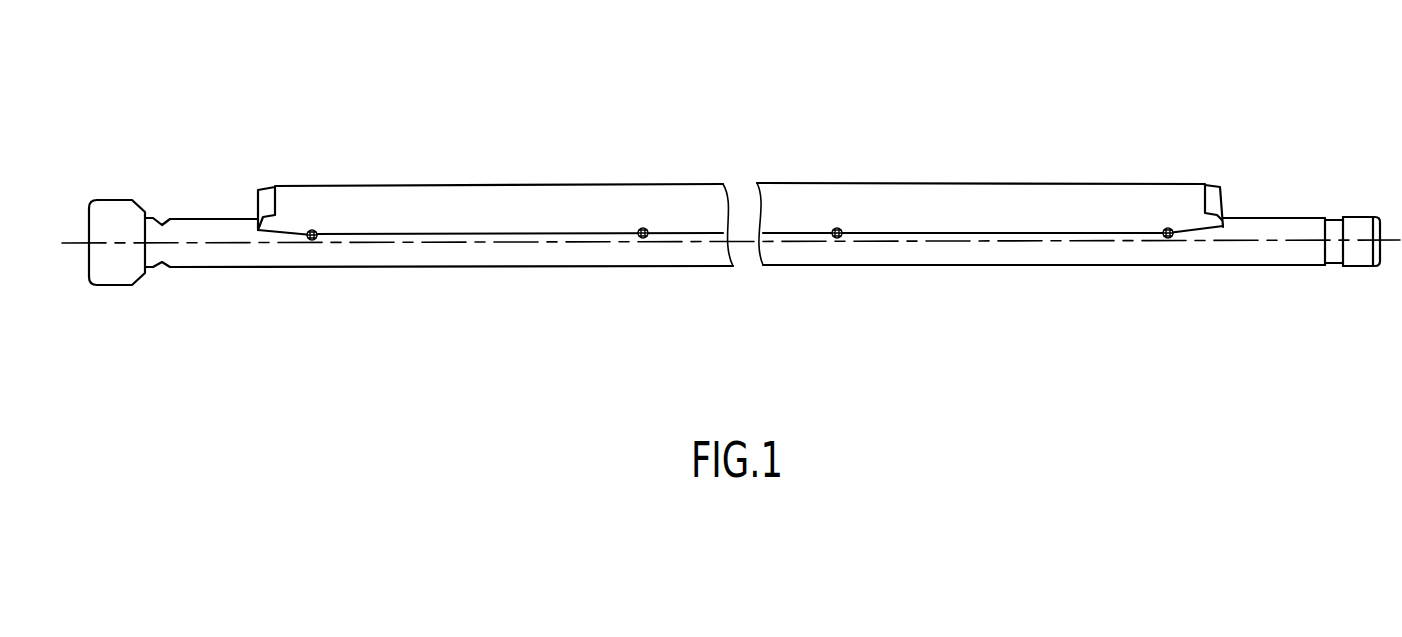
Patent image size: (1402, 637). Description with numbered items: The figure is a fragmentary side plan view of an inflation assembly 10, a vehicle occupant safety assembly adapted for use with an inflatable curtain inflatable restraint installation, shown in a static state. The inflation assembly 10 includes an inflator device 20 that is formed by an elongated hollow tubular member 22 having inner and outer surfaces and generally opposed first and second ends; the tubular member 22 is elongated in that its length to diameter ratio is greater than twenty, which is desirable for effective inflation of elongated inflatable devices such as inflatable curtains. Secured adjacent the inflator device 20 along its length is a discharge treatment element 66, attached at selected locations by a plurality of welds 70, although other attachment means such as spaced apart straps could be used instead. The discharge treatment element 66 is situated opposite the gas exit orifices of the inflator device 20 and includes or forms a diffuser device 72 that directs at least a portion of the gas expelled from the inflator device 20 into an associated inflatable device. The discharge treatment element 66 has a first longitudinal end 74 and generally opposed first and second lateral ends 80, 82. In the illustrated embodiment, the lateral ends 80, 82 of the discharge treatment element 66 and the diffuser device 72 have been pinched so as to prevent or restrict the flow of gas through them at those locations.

The inflation assembly 10 is at (977, 150).
The inflator device 20 is at (227, 272).
The elongated hollow tubular member 22 is at (1088, 257).
The discharge treatment element 66 is at (432, 172).
The welds 70 is at (311, 230).
The diffuser device 72 is at (838, 197).
The first longitudinal end 74 is at (398, 237).
The first lateral end 80 is at (267, 176).
The second lateral end 82 is at (1220, 172).